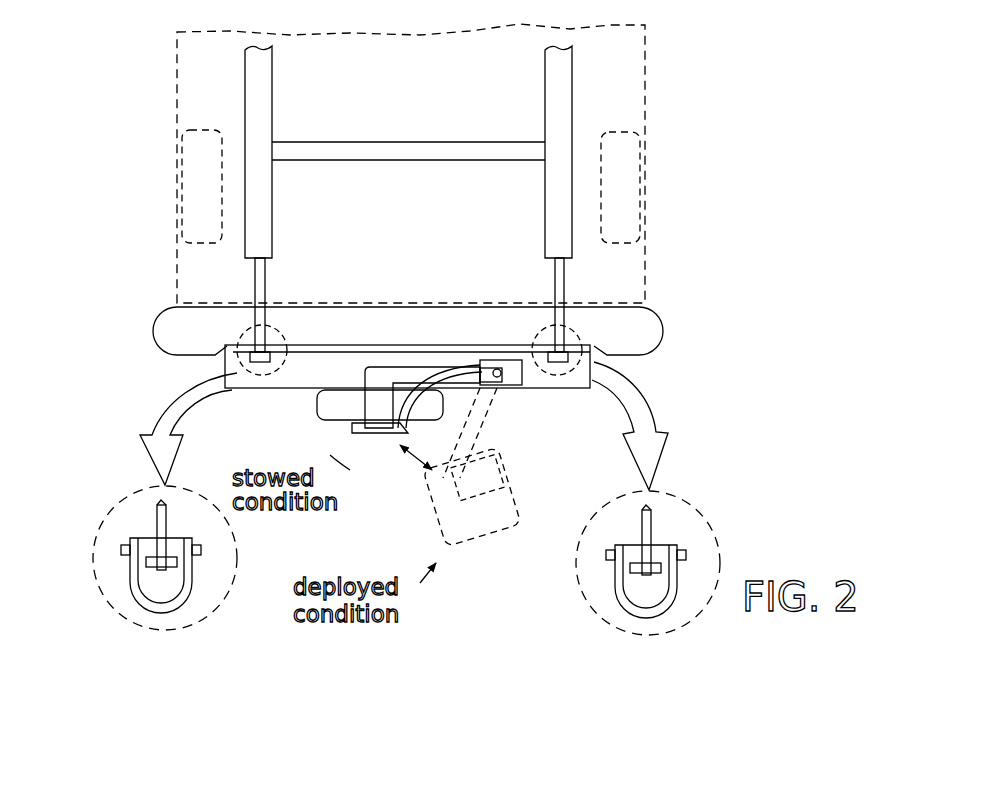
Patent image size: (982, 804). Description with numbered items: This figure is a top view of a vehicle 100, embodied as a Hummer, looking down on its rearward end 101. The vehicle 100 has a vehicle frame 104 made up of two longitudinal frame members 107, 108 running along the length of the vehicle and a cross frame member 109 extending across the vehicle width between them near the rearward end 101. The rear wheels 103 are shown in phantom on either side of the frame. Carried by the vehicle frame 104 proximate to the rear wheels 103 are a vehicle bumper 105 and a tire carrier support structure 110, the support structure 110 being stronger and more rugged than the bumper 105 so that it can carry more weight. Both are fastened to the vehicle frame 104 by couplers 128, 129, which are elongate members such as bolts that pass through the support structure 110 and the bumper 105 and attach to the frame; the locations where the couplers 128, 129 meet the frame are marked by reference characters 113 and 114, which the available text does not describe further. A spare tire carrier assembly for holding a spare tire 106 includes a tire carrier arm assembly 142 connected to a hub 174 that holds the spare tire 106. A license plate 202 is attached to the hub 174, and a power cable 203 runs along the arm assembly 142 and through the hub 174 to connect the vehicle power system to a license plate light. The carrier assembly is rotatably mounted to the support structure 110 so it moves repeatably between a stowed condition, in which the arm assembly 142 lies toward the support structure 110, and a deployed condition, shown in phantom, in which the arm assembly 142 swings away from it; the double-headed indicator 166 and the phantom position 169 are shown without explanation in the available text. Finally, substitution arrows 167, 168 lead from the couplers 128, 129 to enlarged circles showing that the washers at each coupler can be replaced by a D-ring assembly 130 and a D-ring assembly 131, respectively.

The vehicle 100 is at (416, 163).
The rearward end 101 is at (660, 273).
The rear wheels 103 is at (192, 182).
The vehicle frame 104 is at (415, 151).
The vehicle bumper 105 is at (152, 320).
The spare tire 106 is at (322, 412).
The longitudinal frame member 107 is at (255, 125).
The longitudinal frame member 108 is at (562, 97).
The cross frame member 109 is at (387, 148).
The tire carrier support structure 110 is at (292, 385).
The left connection 113 is at (255, 343).
The right connection 114 is at (564, 348).
The coupler 128 is at (262, 288).
The coupler 129 is at (557, 272).
The D-ring assembly 130 is at (245, 577).
The D-ring assembly 131 is at (584, 620).
The tire carrier arm assembly 142 is at (405, 358).
The pivot motion 166 is at (397, 472).
The substitution arrow 167 is at (160, 412).
The substitution arrow 168 is at (642, 415).
The deployed bracket 169 is at (508, 531).
The hub 174 is at (367, 402).
The license plate 202 is at (408, 433).
The power cable 203 is at (460, 372).